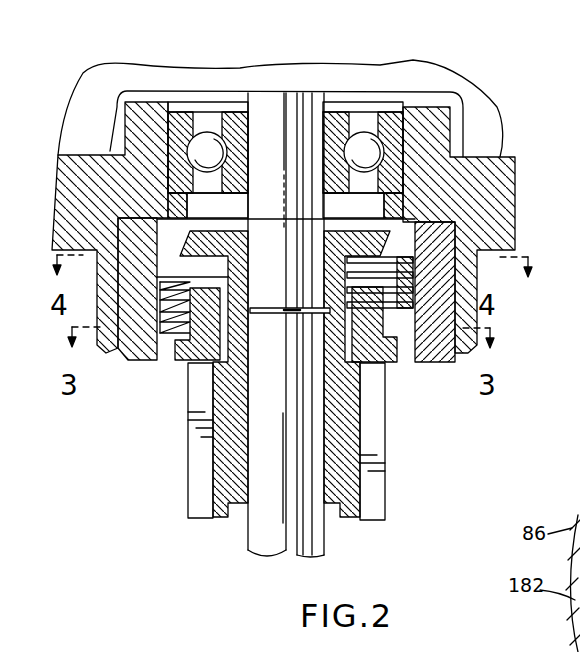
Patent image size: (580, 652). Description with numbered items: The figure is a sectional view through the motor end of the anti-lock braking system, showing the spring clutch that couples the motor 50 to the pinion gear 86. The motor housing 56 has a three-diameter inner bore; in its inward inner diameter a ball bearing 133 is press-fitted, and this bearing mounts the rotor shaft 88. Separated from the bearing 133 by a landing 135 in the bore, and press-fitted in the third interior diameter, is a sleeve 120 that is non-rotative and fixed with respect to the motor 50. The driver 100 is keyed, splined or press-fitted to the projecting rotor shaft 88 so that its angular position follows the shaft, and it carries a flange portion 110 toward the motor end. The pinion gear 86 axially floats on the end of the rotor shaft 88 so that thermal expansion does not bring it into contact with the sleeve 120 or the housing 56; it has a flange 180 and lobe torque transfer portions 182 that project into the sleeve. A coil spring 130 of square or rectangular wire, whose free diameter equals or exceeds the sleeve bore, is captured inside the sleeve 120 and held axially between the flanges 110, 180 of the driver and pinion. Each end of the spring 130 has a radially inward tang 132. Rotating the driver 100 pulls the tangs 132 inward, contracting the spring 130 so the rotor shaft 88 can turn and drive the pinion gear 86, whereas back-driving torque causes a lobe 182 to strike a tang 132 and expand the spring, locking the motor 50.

The motor 50 is at (473, 99).
The motor housing 56 is at (438, 152).
The pinion gear 86 is at (390, 478).
The rotor shaft 88 is at (260, 513).
The driver member 100 is at (176, 229).
The flange portion 110 is at (243, 212).
The sleeve 120 is at (420, 247).
The spring 130 is at (428, 296).
The tang 132 is at (562, 564).
The ball bearing 133 is at (390, 130).
The landing 135 is at (400, 205).
The flange 180 is at (390, 363).
The lobe torque transfer portion 182 is at (330, 322).